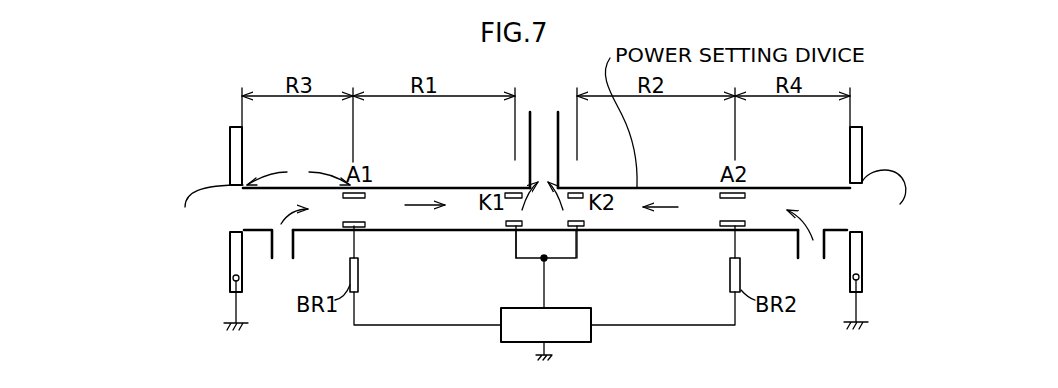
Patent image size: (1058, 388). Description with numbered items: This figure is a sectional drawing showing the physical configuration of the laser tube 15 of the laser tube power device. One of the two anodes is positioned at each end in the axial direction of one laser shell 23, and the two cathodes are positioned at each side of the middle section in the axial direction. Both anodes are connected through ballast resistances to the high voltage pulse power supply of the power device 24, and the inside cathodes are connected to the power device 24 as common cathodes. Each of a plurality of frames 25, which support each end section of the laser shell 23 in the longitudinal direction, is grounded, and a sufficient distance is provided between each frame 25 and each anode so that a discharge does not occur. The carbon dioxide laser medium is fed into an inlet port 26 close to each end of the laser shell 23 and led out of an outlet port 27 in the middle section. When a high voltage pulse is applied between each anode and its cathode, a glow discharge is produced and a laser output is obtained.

The laser tube 15 is at (772, 179).
The laser shell 23 is at (660, 186).
The power device 24 is at (588, 308).
The frames 25 is at (231, 157).
The inlet port 26 is at (280, 250).
The outlet port 27 is at (558, 160).